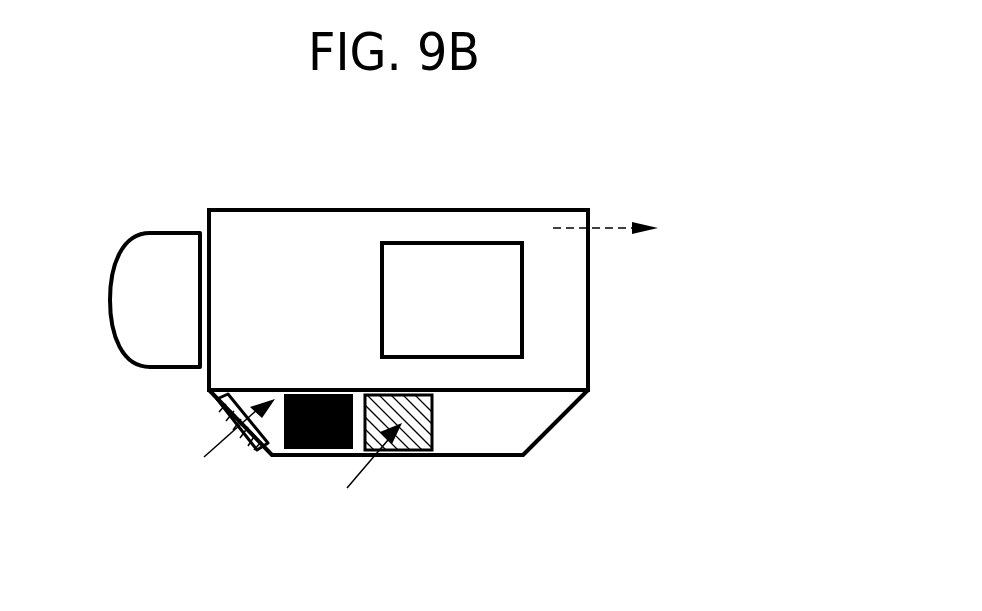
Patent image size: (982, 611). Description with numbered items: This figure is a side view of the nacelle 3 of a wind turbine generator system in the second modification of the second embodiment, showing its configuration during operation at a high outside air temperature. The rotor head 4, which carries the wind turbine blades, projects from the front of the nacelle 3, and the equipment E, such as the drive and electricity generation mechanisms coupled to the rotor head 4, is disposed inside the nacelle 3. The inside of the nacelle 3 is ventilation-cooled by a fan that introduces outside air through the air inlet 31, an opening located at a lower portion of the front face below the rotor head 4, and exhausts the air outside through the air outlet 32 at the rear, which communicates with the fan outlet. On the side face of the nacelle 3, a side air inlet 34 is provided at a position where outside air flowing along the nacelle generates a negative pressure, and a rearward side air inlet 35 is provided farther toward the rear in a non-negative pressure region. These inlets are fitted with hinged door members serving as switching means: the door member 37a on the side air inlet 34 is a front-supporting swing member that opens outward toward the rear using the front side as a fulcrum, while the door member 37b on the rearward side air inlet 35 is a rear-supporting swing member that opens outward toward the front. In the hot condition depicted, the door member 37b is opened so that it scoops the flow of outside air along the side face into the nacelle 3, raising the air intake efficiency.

The nacelle 3 is at (589, 351).
The rotor head 4 is at (111, 286).
The equipment E is at (456, 243).
The air outlet 32 is at (589, 230).
The air inlet 31 is at (220, 407).
The side air inlet 34 is at (286, 475).
The door member 37a is at (302, 449).
The rearward side air inlet 35 is at (441, 457).
The door member 37b is at (432, 437).